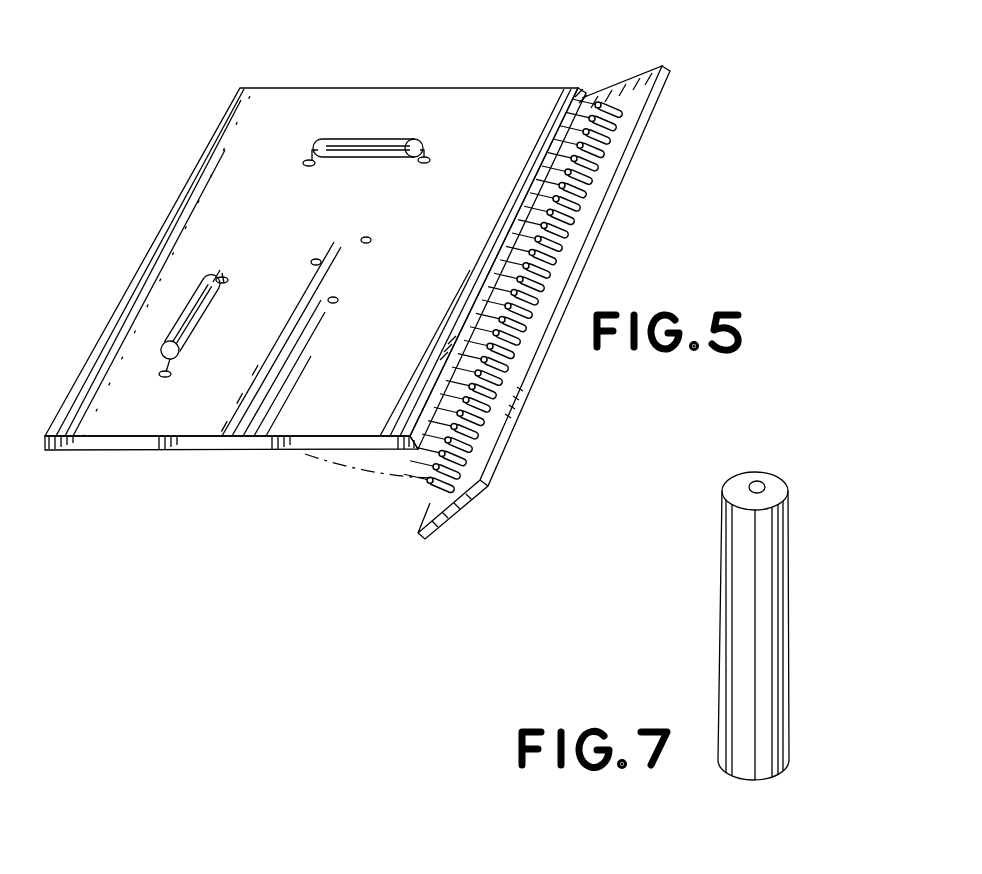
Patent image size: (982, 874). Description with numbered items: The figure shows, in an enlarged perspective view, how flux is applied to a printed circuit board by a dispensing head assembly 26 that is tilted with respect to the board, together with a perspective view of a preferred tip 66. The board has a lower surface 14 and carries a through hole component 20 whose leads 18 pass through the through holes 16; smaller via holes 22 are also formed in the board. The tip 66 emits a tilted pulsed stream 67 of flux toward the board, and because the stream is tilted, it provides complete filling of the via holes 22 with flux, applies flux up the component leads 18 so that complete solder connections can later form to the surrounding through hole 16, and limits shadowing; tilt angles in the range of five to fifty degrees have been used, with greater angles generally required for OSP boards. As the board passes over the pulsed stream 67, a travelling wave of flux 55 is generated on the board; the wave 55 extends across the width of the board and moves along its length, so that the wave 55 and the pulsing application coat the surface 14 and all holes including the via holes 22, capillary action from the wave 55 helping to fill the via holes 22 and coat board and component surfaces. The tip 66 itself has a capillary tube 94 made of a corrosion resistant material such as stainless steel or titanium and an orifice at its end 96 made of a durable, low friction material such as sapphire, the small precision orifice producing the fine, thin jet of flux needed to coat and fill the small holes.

In FIG. 5, the lower surface 14 is at (135, 451).
In FIG. 5, the through holes 16 is at (428, 164).
In FIG. 5, the leads 18 is at (418, 150).
In FIG. 5, the through hole component 20 is at (384, 147).
In FIG. 5, the via holes 22 is at (312, 258).
In FIG. 5, the dispensing head assembly 26 is at (492, 285).
In FIG. 5, the travelling wave of flux 55 is at (300, 458).
In FIG. 5, the tip 66 is at (478, 498).
In FIG. 7, the tip 66 is at (746, 616).
In FIG. 5, the tilted pulsed stream 67 is at (418, 483).
In FIG. 7, the capillary tube 94 is at (790, 612).
In FIG. 7, the orifice at its end 96 is at (765, 488).